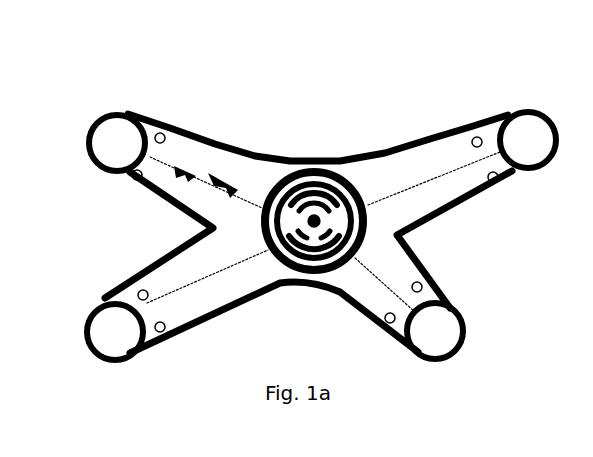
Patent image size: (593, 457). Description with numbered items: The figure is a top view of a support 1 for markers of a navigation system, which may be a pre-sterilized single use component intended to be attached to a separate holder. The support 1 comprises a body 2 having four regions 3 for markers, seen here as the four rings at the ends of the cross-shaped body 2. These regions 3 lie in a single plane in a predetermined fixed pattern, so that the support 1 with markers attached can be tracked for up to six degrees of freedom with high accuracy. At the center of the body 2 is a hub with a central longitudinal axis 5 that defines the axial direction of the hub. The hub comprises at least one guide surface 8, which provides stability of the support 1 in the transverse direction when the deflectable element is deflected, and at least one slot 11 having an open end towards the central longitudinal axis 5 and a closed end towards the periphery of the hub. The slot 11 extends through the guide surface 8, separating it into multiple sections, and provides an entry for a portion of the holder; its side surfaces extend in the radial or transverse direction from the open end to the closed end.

The support 1 is at (318, 88).
The body 2 is at (440, 190).
The region for marker 3 is at (122, 127).
The central longitudinal axis 5 is at (314, 216).
The guide surface 8 is at (335, 195).
The slot 11 is at (284, 199).